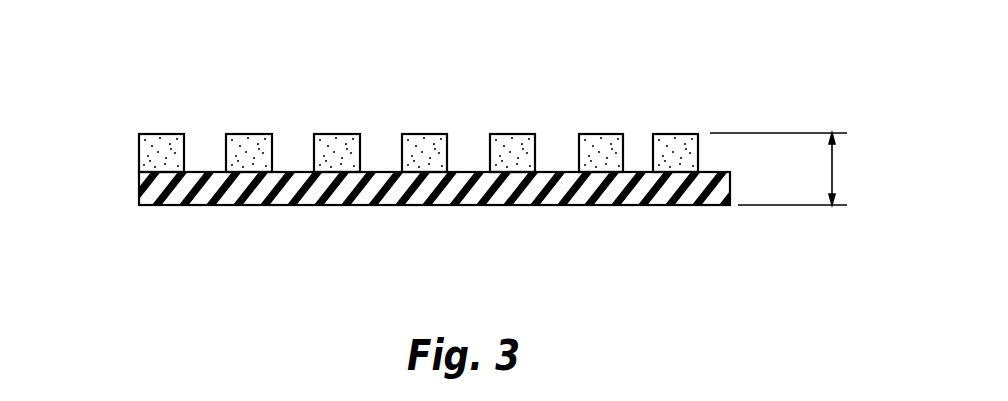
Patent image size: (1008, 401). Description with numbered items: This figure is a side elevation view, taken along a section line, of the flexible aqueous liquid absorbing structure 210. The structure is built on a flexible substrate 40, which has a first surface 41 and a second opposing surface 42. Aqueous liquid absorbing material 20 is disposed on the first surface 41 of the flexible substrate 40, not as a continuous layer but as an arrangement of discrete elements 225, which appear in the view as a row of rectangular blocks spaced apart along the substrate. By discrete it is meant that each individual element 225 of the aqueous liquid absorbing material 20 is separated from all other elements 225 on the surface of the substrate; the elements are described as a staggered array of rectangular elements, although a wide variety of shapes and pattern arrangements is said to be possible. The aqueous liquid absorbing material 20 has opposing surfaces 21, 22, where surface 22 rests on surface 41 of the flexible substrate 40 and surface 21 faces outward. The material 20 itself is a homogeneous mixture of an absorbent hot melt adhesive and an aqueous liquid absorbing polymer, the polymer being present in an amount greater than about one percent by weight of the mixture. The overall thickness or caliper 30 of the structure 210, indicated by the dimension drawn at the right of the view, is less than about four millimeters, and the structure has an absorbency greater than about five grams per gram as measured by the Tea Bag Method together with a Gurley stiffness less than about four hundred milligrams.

The flexible aqueous liquid absorbing structure 210 is at (182, 83).
The aqueous liquid absorbing material 20 is at (139, 153).
The surface 21 is at (152, 134).
The surface 22 is at (163, 174).
The discrete elements 225 is at (402, 148).
The thickness or caliper 30 is at (834, 168).
The flexible substrate 40 is at (187, 190).
The first surface 41 is at (212, 172).
The second opposing surface 42 is at (243, 205).